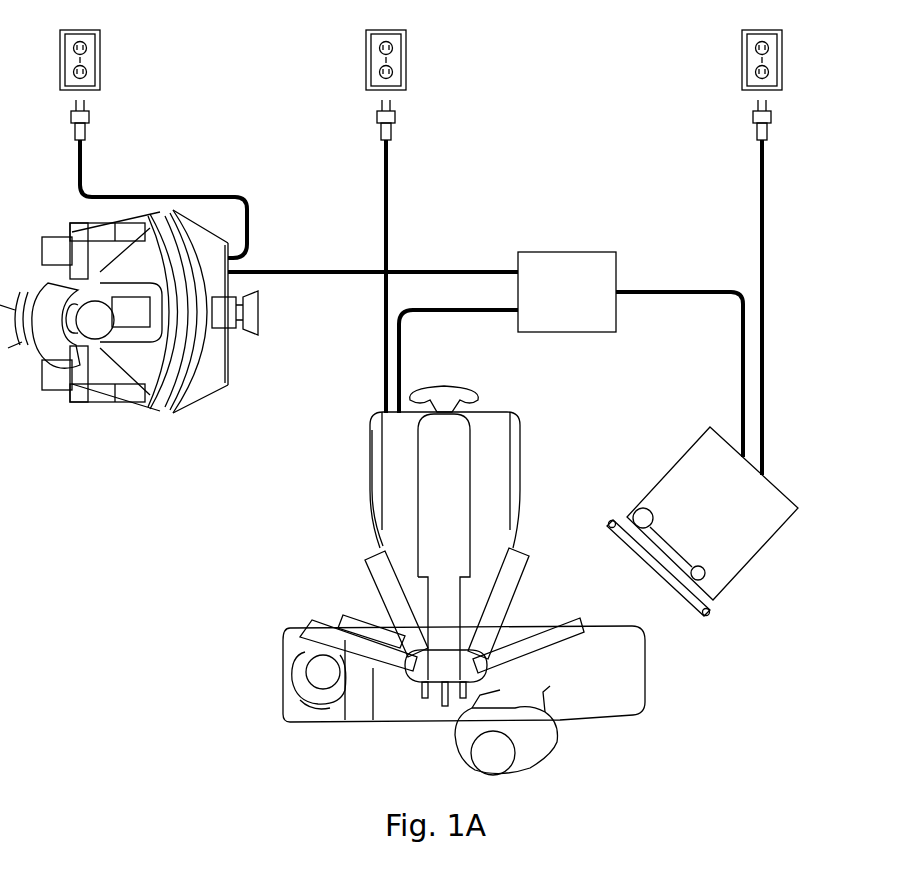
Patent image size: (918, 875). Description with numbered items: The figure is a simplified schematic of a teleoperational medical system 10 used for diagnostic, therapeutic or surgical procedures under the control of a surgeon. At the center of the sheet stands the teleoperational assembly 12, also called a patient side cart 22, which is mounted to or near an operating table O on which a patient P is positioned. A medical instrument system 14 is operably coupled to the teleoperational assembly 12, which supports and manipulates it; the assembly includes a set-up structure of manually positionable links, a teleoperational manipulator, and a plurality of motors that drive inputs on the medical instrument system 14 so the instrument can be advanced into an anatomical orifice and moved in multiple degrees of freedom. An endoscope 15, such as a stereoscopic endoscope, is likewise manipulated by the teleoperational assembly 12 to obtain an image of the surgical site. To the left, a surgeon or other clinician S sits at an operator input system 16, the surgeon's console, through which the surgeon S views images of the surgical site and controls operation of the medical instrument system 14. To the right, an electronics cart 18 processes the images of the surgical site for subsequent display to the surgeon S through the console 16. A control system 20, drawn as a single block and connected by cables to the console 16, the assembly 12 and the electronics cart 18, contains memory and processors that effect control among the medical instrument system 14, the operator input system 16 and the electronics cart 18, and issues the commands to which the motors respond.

The teleoperational medical system 10 is at (572, 48).
The teleoperational assembly 12 is at (457, 520).
The medical instrument system 14 is at (503, 640).
The endoscope 15 is at (443, 728).
The operator input system 16 is at (208, 398).
The electronics cart 18 is at (750, 556).
The control system 20 is at (580, 304).
The patient side cart 22 is at (408, 504).
The surgeon S is at (28, 283).
The patient P is at (305, 708).
The operating table O is at (592, 730).